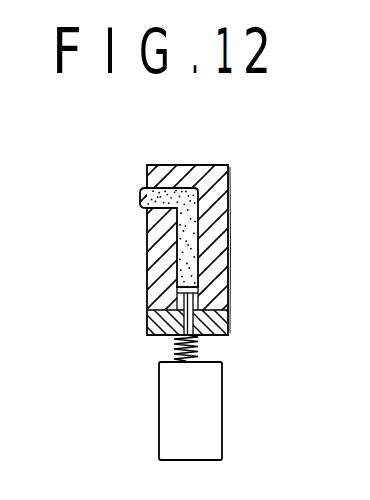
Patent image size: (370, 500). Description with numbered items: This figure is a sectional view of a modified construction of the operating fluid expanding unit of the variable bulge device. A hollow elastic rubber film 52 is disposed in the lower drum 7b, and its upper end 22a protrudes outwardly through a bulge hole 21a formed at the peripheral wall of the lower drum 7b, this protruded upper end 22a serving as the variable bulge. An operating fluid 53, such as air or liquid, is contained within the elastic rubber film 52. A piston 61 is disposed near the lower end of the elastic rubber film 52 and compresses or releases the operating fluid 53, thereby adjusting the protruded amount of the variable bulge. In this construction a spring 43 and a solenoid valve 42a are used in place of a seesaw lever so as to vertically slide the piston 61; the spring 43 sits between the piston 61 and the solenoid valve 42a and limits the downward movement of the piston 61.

The bulge hole 21a is at (147, 180).
The upper end 22a is at (141, 200).
The elastic rubber film 52 is at (177, 230).
The operating fluid 53 is at (177, 267).
The lower drum 7b is at (147, 293).
The piston 61 is at (148, 329).
The spring 43 is at (200, 348).
The solenoid valve 42a is at (162, 397).